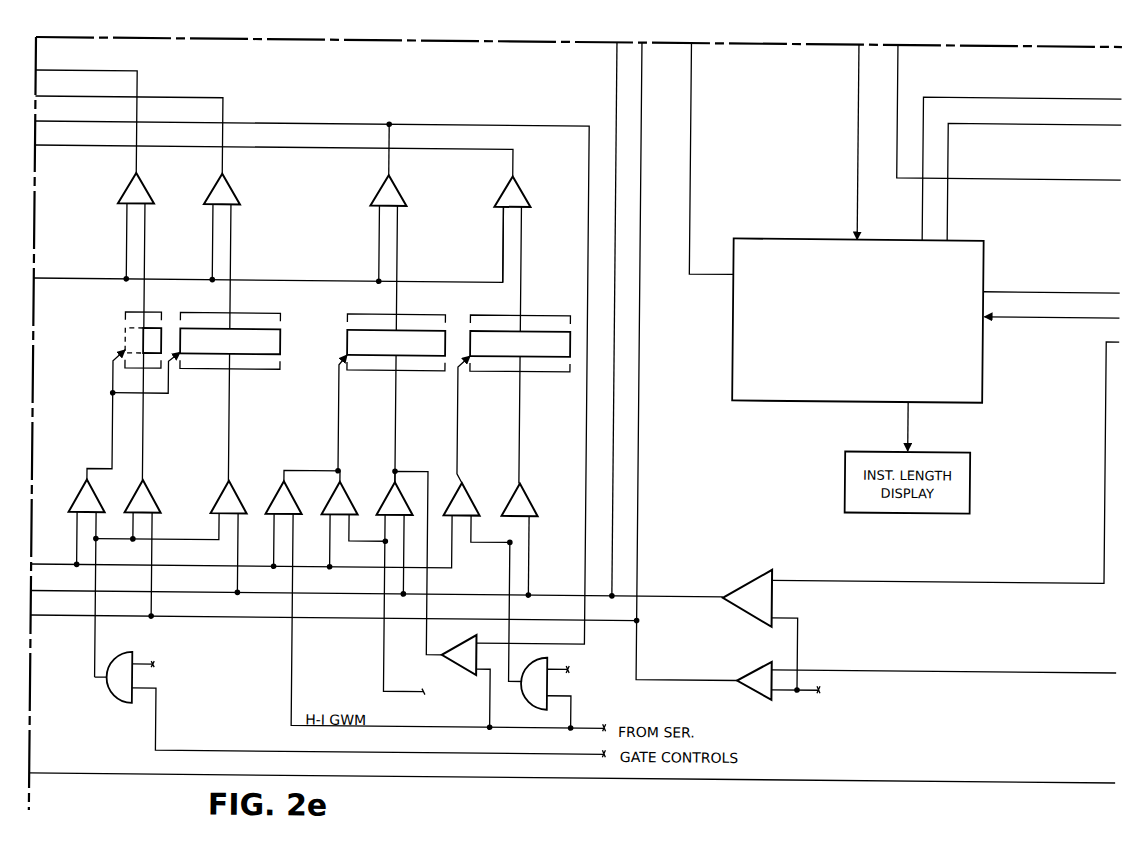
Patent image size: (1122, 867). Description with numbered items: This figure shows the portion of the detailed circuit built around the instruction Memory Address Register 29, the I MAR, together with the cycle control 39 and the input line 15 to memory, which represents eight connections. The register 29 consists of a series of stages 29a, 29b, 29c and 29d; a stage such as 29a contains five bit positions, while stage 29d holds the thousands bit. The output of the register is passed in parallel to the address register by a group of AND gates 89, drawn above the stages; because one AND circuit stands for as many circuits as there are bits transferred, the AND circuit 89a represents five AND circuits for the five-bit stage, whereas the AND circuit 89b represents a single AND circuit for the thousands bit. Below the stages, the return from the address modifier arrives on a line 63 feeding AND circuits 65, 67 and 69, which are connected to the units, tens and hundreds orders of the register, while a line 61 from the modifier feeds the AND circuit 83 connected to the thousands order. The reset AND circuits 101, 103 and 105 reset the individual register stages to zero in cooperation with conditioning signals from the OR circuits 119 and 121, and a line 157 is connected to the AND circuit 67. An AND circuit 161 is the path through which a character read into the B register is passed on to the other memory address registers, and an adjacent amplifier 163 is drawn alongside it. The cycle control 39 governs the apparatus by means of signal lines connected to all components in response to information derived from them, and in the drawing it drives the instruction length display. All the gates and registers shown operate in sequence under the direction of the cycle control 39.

The line 15 is at (826, 780).
The Memory Address Register 29 is at (325, 356).
The stage 29a is at (528, 325).
The stage 29b is at (409, 326).
The stage 29c is at (242, 326).
The stage 29d is at (149, 326).
The cycle control 39 is at (984, 261).
The line 61 is at (642, 462).
The line 63 is at (617, 445).
The AND circuit 65 is at (525, 500).
The AND circuit 67 is at (397, 500).
The AND circuit 69 is at (232, 500).
The AND circuit 83 is at (148, 501).
The AND gate 89 is at (294, 186).
The AND circuit 89a is at (516, 183).
The AND circuit 89b is at (140, 183).
The reset AND circuit 101 is at (467, 501).
The reset AND circuit 103 is at (286, 500).
The reset AND circuit 105 is at (84, 499).
The OR circuit 119 is at (535, 686).
The OR circuit 121 is at (123, 692).
The line 157 is at (391, 657).
The AND circuit 161 is at (749, 586).
The inverter 163 is at (805, 686).